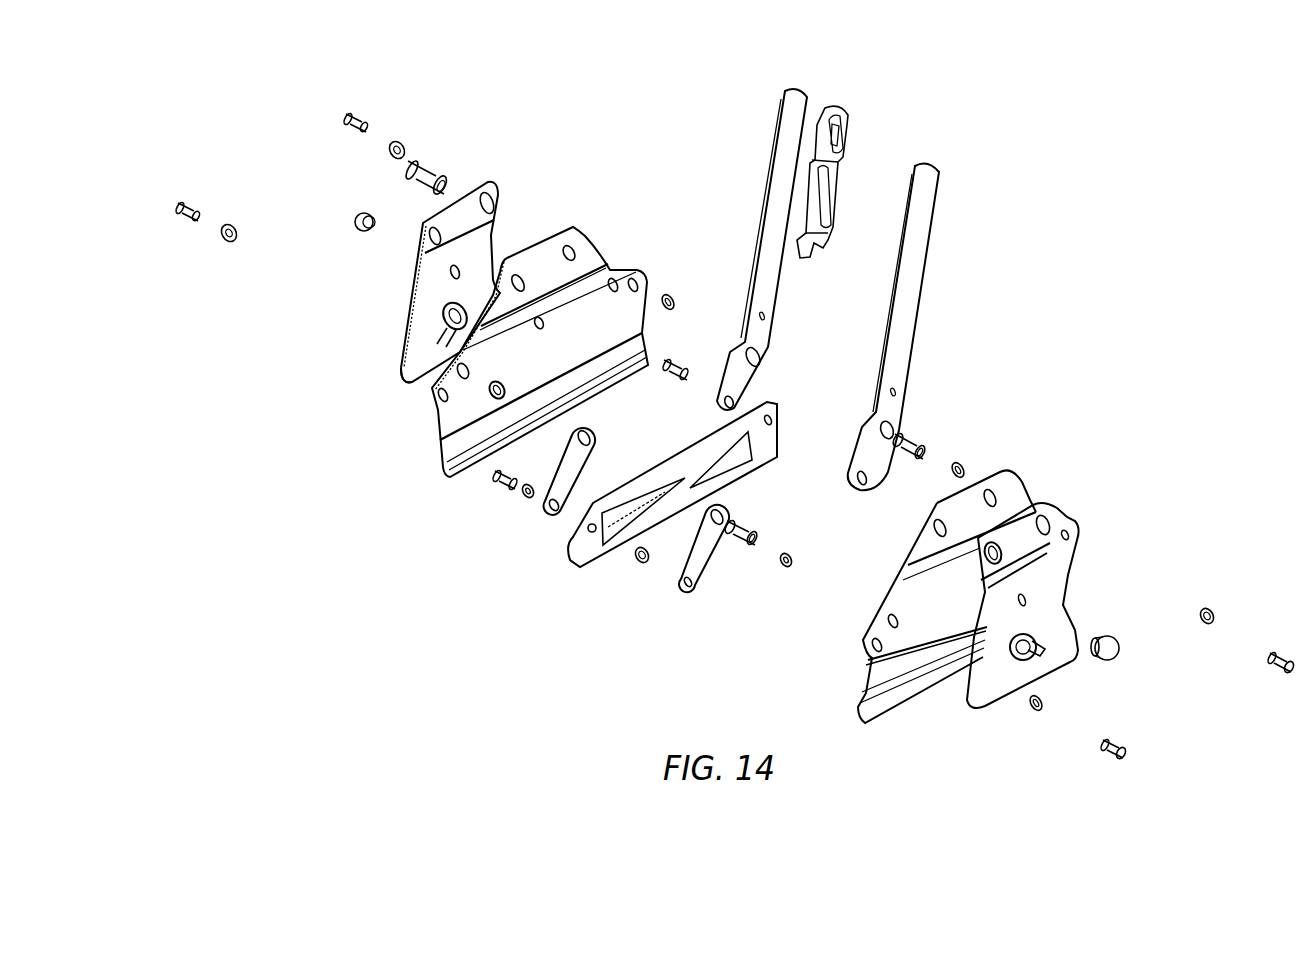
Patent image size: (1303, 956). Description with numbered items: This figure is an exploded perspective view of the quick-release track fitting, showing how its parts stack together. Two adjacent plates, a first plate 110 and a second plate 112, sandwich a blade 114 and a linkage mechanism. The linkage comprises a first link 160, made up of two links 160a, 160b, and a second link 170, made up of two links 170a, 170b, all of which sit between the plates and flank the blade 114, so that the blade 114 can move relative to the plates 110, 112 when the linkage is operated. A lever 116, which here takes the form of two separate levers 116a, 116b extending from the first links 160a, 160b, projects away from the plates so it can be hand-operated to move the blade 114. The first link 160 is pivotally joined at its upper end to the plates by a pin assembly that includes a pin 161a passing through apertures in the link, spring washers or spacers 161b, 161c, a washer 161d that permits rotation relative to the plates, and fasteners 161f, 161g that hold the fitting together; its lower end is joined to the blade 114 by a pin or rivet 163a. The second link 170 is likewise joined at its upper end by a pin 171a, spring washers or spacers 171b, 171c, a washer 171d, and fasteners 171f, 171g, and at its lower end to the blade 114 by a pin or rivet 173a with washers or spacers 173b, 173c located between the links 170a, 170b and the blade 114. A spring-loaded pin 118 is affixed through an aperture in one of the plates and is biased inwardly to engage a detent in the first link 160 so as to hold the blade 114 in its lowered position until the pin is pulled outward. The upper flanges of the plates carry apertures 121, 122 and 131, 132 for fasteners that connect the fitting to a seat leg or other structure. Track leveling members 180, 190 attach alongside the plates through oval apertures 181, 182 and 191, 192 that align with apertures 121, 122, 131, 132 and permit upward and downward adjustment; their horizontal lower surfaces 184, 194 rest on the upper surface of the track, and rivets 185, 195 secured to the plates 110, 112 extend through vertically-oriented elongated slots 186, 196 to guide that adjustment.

The first plate 110 is at (588, 248).
The second plate 112 is at (1008, 498).
The blade 114 is at (780, 445).
The lever 116 is at (883, 289).
The first lever 116a is at (795, 125).
The second lever 116b is at (922, 212).
The spring-loaded pin 118 is at (424, 165).
The aperture 121 is at (570, 245).
The aperture 122 is at (519, 277).
The aperture 131 is at (1005, 497).
The aperture 132 is at (936, 530).
The first link 160 is at (860, 304).
The first link 160a is at (776, 288).
The first link 160b is at (872, 455).
The pin 161a is at (910, 440).
The spring washer or spacer 161b is at (668, 294).
The spring washer or spacer 161c is at (962, 466).
The washer 161d is at (404, 140).
The fastener 161f is at (370, 120).
The fastener 161g is at (1270, 664).
The pin or rivet 163a is at (676, 360).
The second link 170 is at (640, 513).
The second link 170a is at (590, 455).
The second link 170b is at (694, 565).
The pin 171a is at (738, 530).
The spring washer or spacer 171b is at (502, 385).
The spring washer or spacer 171c is at (781, 572).
The washer 171d is at (236, 224).
The fastener 171f is at (200, 210).
The fastener 171g is at (1100, 750).
The pin or rivet 173a is at (498, 482).
The washer or spacer 173b is at (524, 499).
The washer or spacer 173c is at (638, 564).
The track leveling member 180 is at (435, 288).
The aperture 181 is at (491, 195).
The aperture 182 is at (433, 238).
The horizontal lower surface 184 is at (406, 389).
The rivet 185 is at (357, 230).
The elongated slot 186 is at (452, 272).
The track leveling member 190 is at (1055, 628).
The aperture 191 is at (1048, 518).
The aperture 192 is at (978, 570).
The horizontal lower surface 194 is at (1050, 668).
The rivet 195 is at (1112, 660).
The elongated slot 196 is at (1030, 592).